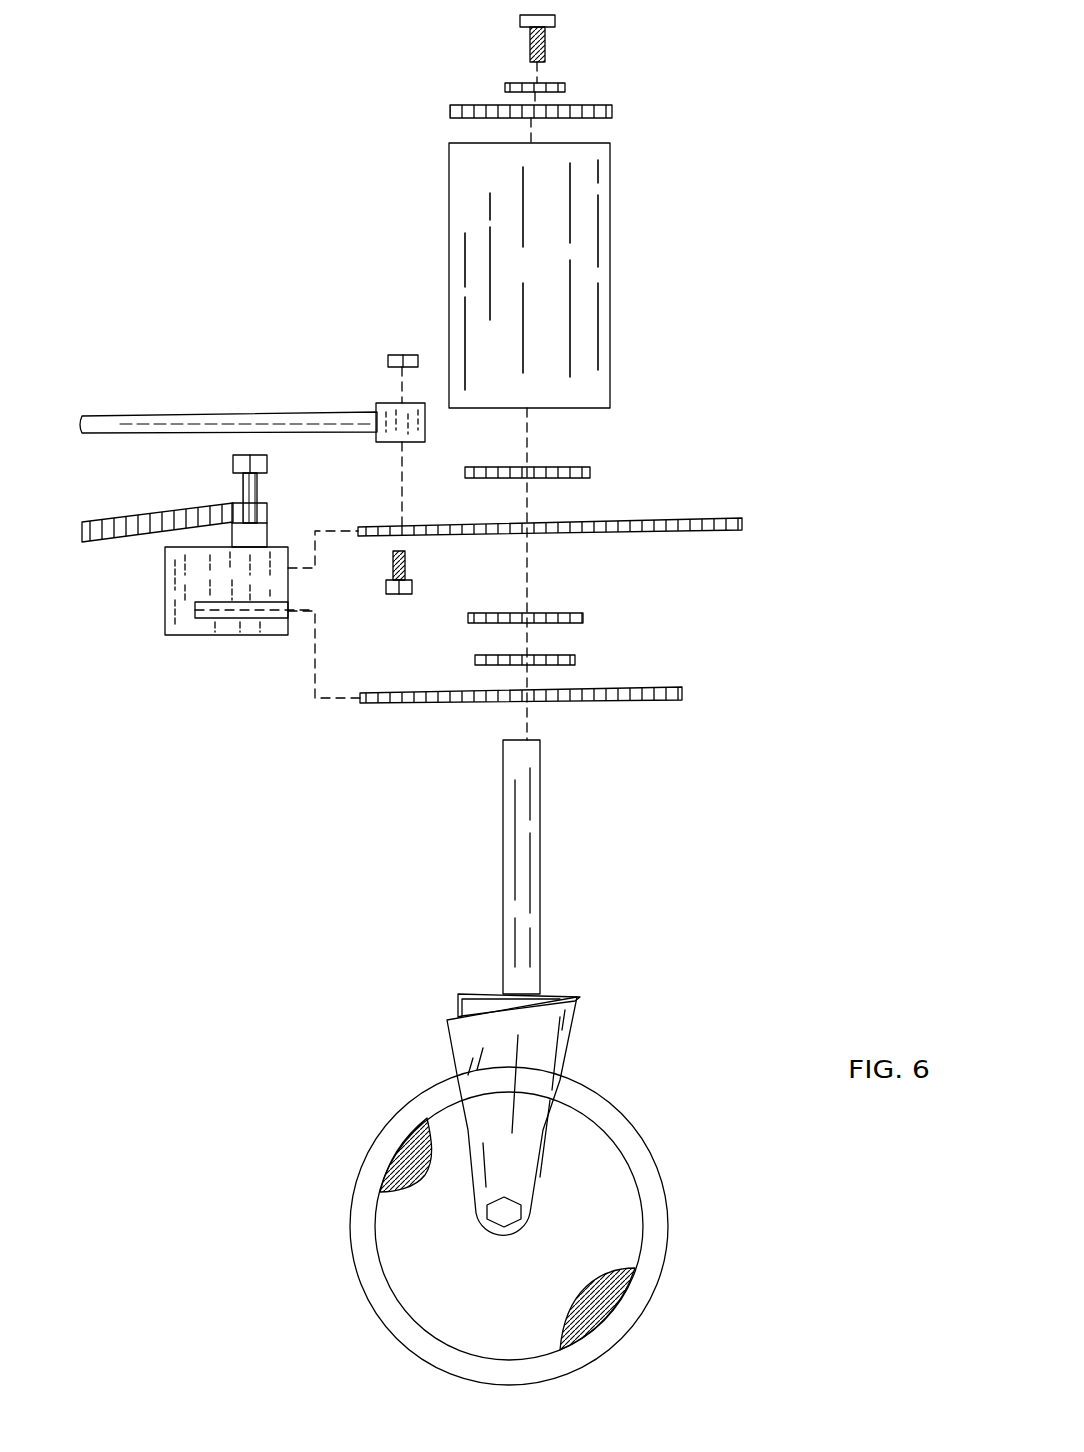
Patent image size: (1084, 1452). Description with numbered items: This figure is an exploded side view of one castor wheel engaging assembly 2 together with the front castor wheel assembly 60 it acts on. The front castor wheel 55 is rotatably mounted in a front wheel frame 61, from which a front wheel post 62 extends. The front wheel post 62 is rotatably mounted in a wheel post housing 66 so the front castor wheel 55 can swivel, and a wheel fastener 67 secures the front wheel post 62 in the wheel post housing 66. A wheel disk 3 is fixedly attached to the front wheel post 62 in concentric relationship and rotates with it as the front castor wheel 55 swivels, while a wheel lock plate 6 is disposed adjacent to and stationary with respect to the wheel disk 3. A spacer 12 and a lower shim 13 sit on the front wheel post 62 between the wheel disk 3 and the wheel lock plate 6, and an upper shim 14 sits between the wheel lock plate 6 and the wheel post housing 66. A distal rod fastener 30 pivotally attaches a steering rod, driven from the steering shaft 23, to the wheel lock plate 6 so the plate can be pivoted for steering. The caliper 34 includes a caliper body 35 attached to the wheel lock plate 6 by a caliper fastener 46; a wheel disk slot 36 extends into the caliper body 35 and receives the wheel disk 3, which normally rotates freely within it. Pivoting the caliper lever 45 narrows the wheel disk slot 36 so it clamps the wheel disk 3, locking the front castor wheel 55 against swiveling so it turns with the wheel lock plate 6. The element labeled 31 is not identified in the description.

The castor wheel engaging assembly 2 is at (742, 458).
The wheel disk 3 is at (680, 690).
The wheel lock plate 6 is at (738, 518).
The spacer 12 is at (472, 660).
The lower shim 13 is at (585, 618).
The upper shim 14 is at (592, 472).
The steering shaft 23 is at (262, 422).
The distal rod fastener 30 is at (390, 562).
The bolt 31 is at (390, 360).
The caliper 34 is at (178, 652).
The caliper body 35 is at (248, 645).
The wheel disk slot 36 is at (268, 612).
The caliper lever 45 is at (124, 520).
The caliper fastener 46 is at (240, 488).
The front castor wheel 55 is at (605, 1158).
The front castor wheel assembly 60 is at (402, 250).
The front wheel frame 61 is at (545, 1043).
The front wheel post 62 is at (525, 846).
The wheel post housing 66 is at (588, 393).
The wheel fastener 67 is at (547, 45).